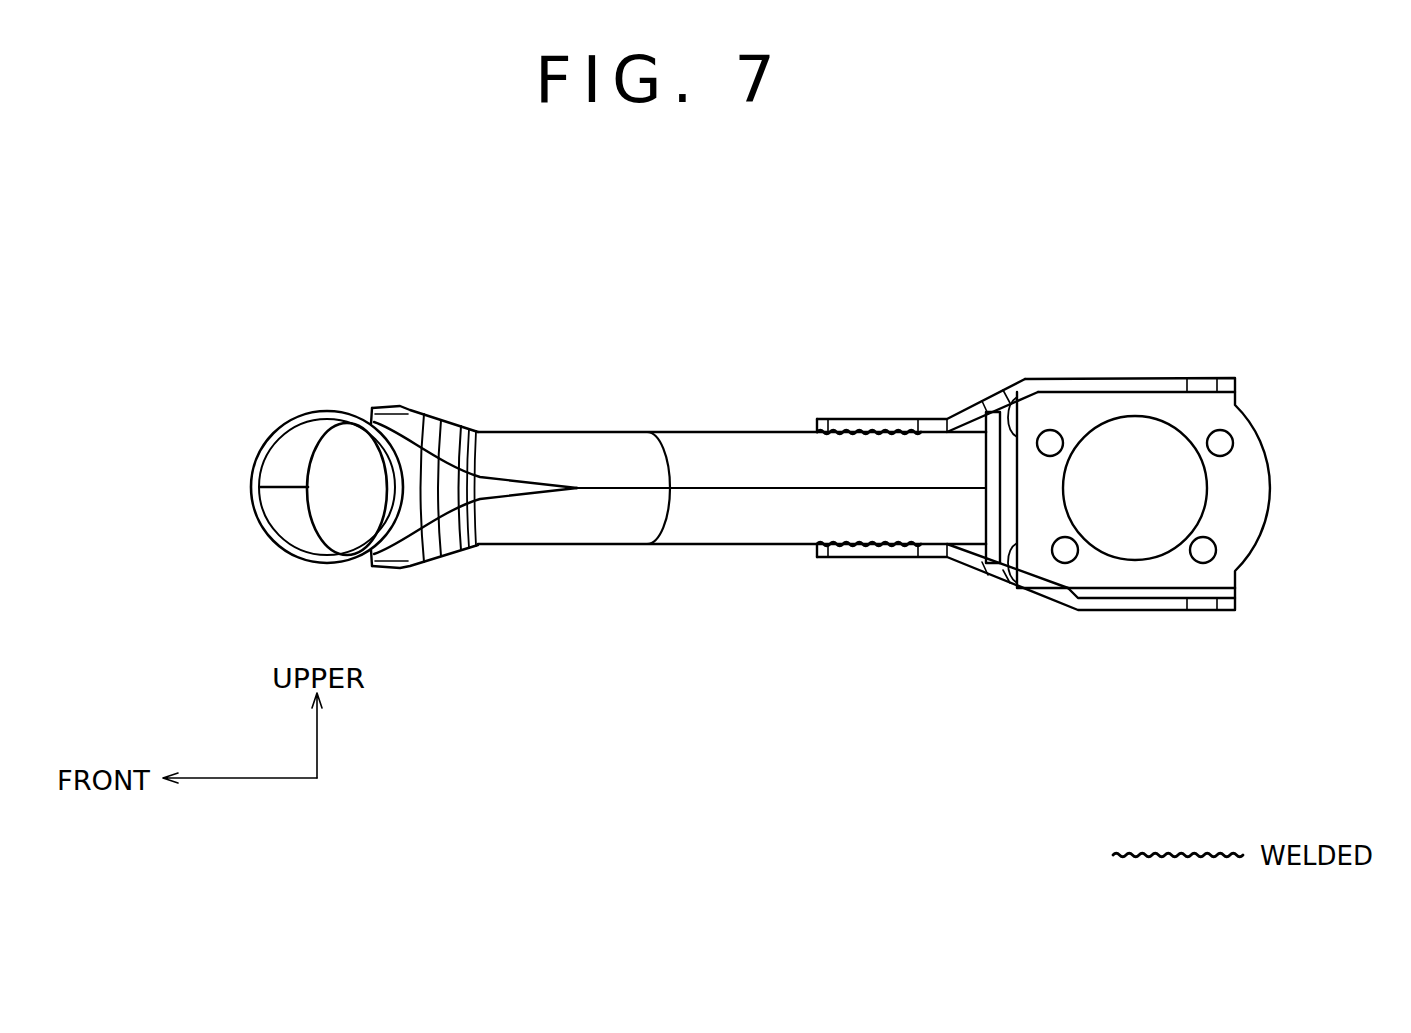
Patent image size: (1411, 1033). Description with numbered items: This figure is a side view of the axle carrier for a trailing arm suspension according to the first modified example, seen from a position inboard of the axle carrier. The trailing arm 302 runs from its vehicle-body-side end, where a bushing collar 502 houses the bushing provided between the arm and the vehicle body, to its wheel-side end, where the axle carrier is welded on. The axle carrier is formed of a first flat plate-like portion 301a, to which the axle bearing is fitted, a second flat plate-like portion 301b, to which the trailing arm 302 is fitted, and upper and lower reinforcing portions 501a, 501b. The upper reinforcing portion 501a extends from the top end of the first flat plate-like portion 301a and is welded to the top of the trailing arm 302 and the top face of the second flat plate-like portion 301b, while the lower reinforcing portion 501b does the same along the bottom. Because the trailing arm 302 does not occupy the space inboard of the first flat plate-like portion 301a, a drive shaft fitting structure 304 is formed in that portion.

The bushing collar 502 is at (290, 522).
The trailing arm 302 is at (753, 517).
The second flat plate-like portion 301b is at (988, 412).
The drive shaft fitting structure 304 is at (1131, 436).
The upper reinforcing portion 501a is at (1207, 378).
The first flat plate-like portion 301a is at (1243, 490).
The lower reinforcing portion 501b is at (1203, 612).